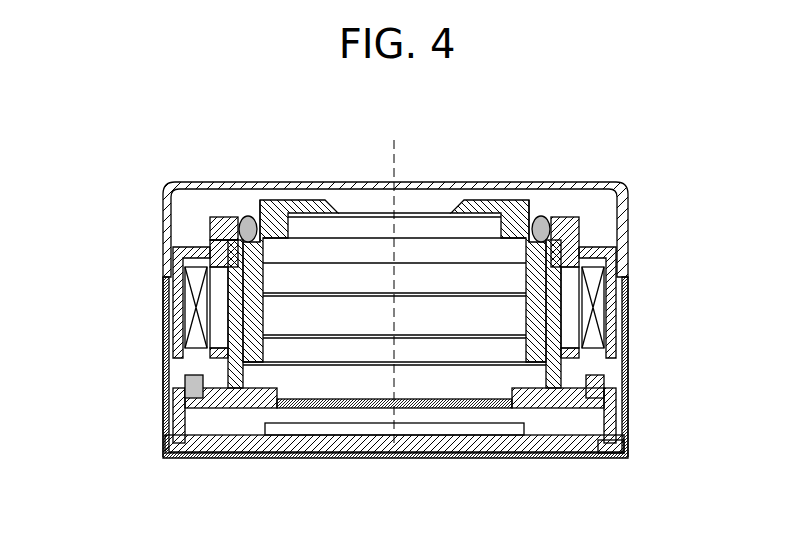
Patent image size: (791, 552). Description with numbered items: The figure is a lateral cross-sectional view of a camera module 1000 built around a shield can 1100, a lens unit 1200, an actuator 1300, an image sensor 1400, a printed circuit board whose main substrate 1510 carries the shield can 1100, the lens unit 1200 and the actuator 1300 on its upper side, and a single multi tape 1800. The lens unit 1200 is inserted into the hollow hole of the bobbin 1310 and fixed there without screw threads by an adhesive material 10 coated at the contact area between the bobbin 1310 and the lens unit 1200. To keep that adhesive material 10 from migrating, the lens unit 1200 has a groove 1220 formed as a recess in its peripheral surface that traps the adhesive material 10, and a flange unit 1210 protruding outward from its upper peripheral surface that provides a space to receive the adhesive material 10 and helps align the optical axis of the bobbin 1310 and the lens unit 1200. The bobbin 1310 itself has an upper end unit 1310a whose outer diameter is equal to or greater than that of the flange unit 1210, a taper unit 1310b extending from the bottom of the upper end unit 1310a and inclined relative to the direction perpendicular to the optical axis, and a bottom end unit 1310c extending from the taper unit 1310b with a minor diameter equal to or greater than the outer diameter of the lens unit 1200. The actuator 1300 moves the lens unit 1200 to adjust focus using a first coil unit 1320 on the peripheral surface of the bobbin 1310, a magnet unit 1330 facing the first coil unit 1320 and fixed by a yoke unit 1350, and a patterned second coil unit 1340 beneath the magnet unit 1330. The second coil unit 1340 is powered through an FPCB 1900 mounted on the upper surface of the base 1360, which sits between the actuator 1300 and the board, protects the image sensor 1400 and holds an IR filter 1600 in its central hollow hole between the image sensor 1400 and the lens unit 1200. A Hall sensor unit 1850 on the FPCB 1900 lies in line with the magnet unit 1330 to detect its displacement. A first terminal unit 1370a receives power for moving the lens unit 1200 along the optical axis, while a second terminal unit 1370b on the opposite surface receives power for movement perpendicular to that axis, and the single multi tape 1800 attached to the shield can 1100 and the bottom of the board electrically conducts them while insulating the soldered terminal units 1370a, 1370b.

The camera module 1000 is at (183, 101).
The shield can 1100 is at (612, 185).
The lens unit 1200 is at (490, 198).
The flange unit 1210 is at (220, 236).
The groove 1220 is at (252, 218).
The adhesive material 10 is at (545, 218).
The actuator 1300 is at (700, 200).
The bobbin 1310 is at (88, 180).
The upper end unit 1310a is at (216, 234).
The taper unit 1310b is at (224, 262).
The bottom end unit 1310c is at (237, 305).
The first coil unit 1320 is at (572, 272).
The magnet unit 1330 is at (610, 296).
The second coil unit 1340 is at (600, 381).
The yoke unit 1350 is at (598, 316).
The base 1360 is at (603, 452).
The first terminal unit 1370a is at (624, 430).
The second terminal unit 1370b is at (168, 431).
The image sensor 1400 is at (488, 428).
The main substrate 1510 is at (550, 447).
The IR filter 1600 is at (338, 408).
The single multi tape 1800 is at (167, 453).
The Hall sensor unit 1850 is at (205, 405).
The FPCB 1900 is at (187, 400).